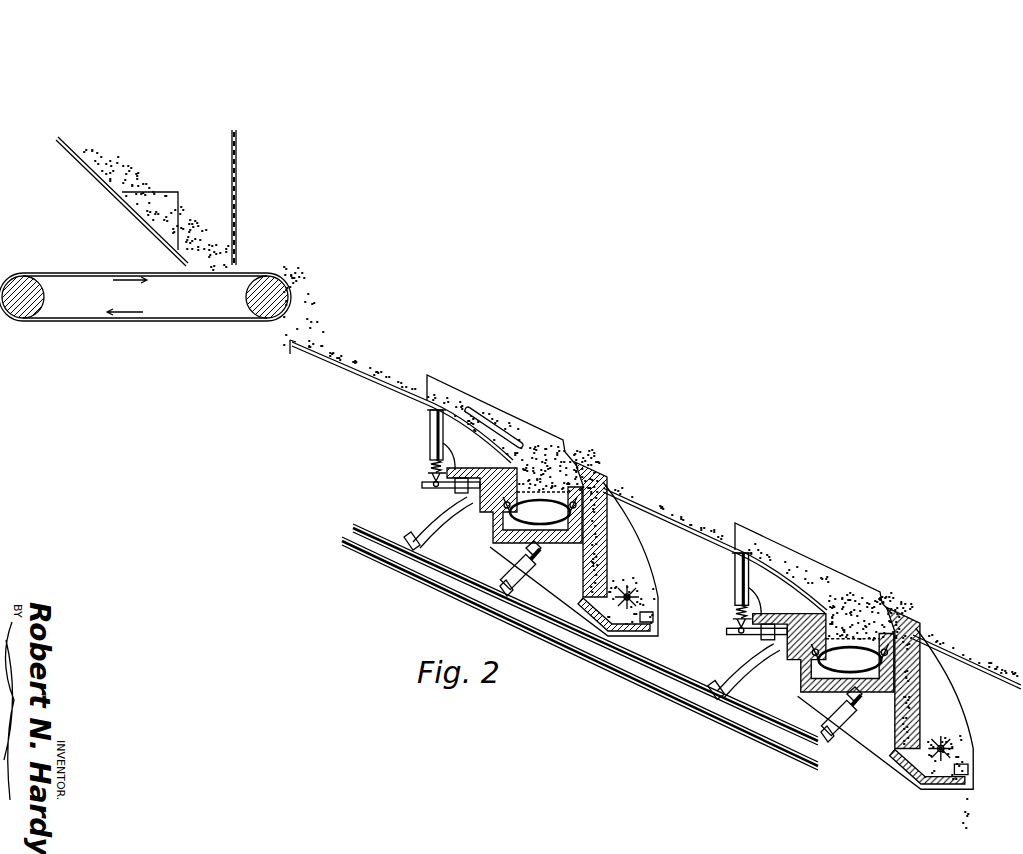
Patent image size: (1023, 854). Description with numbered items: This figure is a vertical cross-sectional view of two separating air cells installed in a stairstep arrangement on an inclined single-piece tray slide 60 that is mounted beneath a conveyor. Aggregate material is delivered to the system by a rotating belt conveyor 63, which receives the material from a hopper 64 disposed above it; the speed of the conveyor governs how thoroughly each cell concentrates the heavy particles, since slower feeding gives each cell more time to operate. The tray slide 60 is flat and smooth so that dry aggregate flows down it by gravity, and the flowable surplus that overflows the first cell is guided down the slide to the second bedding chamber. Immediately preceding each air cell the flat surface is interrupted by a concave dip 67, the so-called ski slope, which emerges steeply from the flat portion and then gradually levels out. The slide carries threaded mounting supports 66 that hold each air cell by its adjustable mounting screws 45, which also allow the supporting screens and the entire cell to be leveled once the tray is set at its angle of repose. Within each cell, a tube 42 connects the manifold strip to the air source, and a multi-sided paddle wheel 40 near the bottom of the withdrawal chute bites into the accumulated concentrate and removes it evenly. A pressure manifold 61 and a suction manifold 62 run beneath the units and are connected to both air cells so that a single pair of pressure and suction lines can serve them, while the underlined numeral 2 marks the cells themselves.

The hydraulic cylinder 2 is at (472, 549).
The paddle wheel 40 is at (640, 590).
The tube 42 is at (457, 497).
The adjustable mounting screw 45 is at (430, 472).
The slide 60 is at (368, 374).
The pressure manifold 61 is at (375, 560).
The suction manifold 62 is at (452, 586).
The belt conveyor 63 is at (278, 273).
The hopper 64 is at (220, 235).
The threaded mounting support 66 is at (430, 433).
The concave dip 67 is at (503, 420).